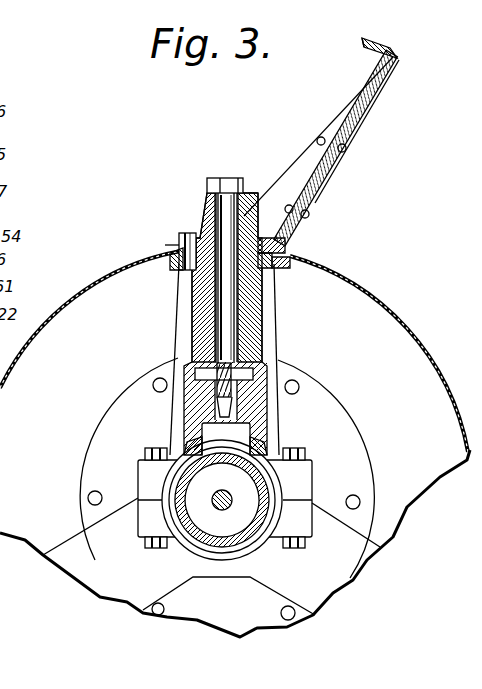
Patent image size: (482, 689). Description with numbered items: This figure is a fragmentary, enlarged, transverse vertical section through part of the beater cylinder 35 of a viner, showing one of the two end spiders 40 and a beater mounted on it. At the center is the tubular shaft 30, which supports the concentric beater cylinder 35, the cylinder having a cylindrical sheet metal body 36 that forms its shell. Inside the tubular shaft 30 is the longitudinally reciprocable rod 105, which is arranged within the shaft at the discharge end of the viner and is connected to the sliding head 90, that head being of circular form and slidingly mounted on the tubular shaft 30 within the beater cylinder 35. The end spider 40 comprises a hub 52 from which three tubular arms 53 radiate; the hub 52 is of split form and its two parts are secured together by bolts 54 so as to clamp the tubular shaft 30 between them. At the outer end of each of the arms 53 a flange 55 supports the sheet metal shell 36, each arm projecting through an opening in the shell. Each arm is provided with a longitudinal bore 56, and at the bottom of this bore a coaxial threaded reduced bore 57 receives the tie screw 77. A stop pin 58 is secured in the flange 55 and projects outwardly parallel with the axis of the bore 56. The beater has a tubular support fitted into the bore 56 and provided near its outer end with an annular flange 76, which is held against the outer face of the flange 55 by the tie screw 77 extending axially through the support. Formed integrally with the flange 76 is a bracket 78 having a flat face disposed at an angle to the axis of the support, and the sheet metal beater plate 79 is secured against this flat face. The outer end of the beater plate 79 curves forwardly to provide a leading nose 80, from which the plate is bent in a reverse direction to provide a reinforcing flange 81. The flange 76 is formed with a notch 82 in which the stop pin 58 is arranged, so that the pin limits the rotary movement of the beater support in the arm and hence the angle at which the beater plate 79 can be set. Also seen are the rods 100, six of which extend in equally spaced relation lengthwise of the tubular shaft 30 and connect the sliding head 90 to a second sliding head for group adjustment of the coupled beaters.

The tubular shaft 30 is at (232, 542).
The beater cylinder 35 is at (424, 336).
The cylindrical sheet metal body 36 is at (358, 286).
The end spider 40 is at (324, 365).
The hub 52 is at (306, 483).
The tubular arm 53 is at (262, 344).
The bolt 54 is at (153, 549).
The flange 55 is at (283, 263).
The longitudinal bore 56 is at (192, 320).
The threaded reduced bore 57 is at (200, 427).
The stop pin 58 is at (190, 233).
The annular flange 76 is at (254, 238).
The tie screw 77 is at (231, 178).
The bracket 78 is at (300, 156).
The sheet metal beater plate 79 is at (379, 87).
The leading nose 80 is at (398, 60).
The reinforcing flange 81 is at (391, 40).
The notch 82 is at (171, 242).
The sliding head 90 is at (330, 413).
The rod 100 is at (154, 381).
The longitudinally reciprocable rod 105 is at (235, 482).